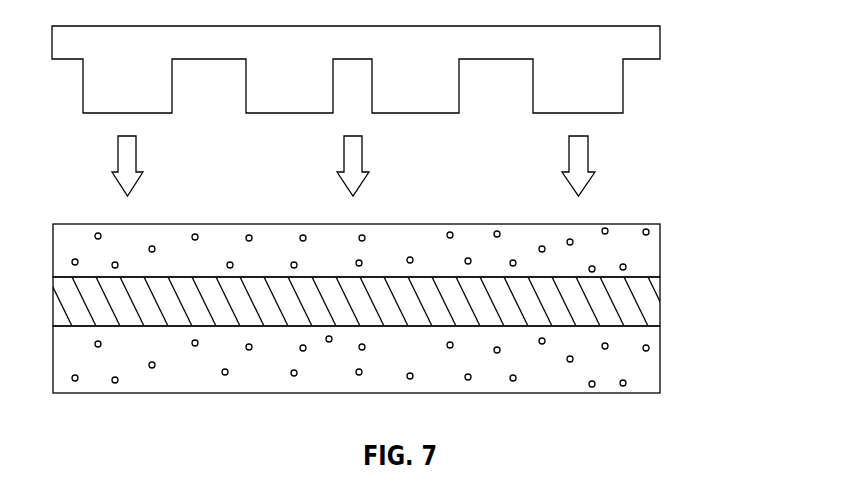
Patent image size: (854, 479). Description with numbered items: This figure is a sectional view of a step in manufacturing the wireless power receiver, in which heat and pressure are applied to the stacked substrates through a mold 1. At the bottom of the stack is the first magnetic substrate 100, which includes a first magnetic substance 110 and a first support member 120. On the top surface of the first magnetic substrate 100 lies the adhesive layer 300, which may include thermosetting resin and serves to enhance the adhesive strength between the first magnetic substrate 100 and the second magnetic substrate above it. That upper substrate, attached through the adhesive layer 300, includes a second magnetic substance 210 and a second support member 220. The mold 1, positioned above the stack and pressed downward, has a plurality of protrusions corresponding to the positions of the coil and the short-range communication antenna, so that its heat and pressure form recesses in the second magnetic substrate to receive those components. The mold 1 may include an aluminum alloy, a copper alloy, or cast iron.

The mold 1 is at (656, 40).
The first magnetic substrate 100 is at (405, 359).
The first magnetic substance 110 is at (649, 348).
The first support member 120 is at (660, 380).
The second magnetic substance 210 is at (649, 232).
The second support member 220 is at (385, 250).
The adhesive layer 300 is at (660, 300).